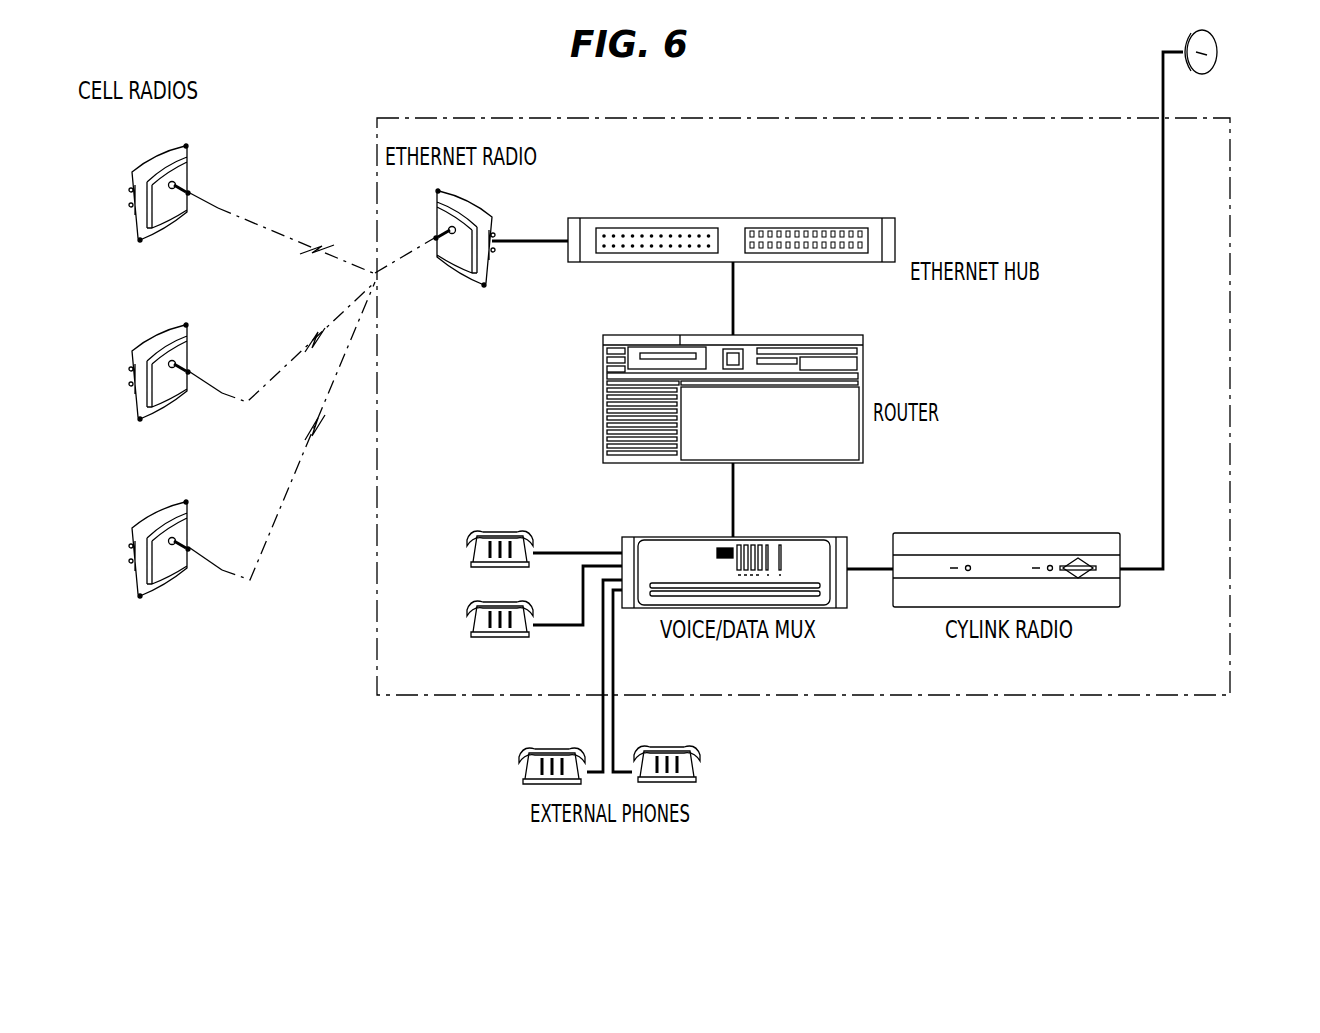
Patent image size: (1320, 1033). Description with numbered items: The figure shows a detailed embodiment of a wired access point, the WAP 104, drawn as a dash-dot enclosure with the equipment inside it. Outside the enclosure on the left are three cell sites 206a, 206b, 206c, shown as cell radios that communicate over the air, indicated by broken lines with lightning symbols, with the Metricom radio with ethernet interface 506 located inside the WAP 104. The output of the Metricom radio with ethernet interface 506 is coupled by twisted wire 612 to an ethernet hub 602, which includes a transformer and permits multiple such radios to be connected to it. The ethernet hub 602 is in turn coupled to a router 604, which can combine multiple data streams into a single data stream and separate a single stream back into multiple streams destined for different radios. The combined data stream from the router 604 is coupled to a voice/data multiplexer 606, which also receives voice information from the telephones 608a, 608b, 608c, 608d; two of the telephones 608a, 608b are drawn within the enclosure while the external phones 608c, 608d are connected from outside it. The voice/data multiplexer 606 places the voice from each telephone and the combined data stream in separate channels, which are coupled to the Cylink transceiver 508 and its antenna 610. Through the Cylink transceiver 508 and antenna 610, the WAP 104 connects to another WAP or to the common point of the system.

The wired access point (WAP) 104 is at (1230, 378).
The cell site 206a is at (140, 163).
The cell site 206b is at (140, 341).
The cell site 206c is at (140, 516).
The Metricom radio with ethernet interface 506 is at (492, 213).
The Cylink transceiver 508 is at (1052, 533).
The ethernet hub 602 is at (897, 240).
The router 604 is at (863, 380).
The voice/data multiplexer 606 is at (797, 536).
The telephone 608a is at (465, 540).
The telephone 608b is at (465, 610).
The telephone 608c is at (517, 755).
The telephone 608d is at (700, 755).
The antenna 610 is at (1218, 47).
The twisted wire 612 is at (528, 243).